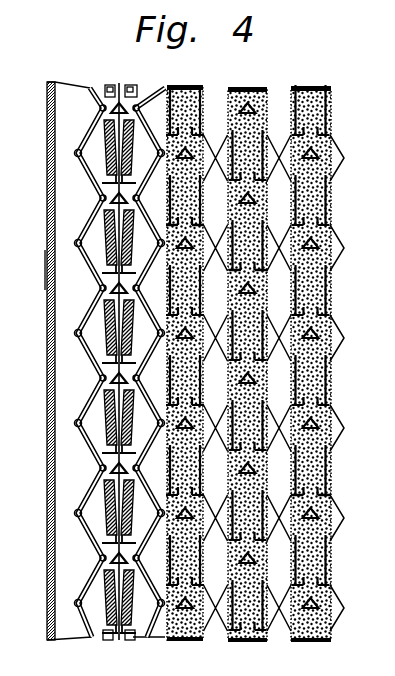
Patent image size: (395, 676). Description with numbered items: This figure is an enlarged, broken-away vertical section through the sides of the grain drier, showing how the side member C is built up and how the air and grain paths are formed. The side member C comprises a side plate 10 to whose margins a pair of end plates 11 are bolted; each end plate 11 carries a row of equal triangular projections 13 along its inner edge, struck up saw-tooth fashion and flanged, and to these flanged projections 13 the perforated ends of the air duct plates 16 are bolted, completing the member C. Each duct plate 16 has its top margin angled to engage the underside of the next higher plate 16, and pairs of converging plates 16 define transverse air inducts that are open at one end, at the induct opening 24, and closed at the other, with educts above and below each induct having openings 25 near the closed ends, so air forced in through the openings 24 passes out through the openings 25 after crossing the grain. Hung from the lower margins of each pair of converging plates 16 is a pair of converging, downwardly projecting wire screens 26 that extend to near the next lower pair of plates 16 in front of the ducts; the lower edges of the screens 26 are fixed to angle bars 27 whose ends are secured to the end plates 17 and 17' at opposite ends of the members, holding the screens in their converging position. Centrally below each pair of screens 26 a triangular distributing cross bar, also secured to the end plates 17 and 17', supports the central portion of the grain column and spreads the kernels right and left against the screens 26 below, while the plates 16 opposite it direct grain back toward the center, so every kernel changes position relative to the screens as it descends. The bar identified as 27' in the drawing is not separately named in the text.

The side plate 10 is at (47, 343).
The end plate 11 is at (57, 472).
The triangular projection 13 is at (105, 361).
The air duct plate 16 is at (83, 138).
The end plate 17 is at (109, 364).
The end plate 17' is at (137, 364).
The induct opening 24 is at (372, 216).
The educt opening 25 is at (208, 363).
The screen 26 is at (108, 243).
The angle bar 27 is at (228, 355).
The arrow head 27' is at (199, 360).
The side member C is at (47, 268).